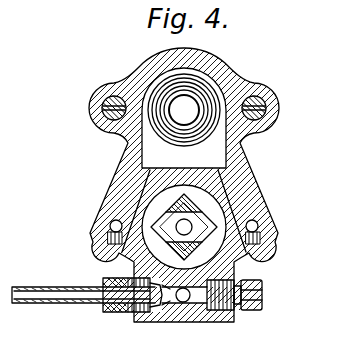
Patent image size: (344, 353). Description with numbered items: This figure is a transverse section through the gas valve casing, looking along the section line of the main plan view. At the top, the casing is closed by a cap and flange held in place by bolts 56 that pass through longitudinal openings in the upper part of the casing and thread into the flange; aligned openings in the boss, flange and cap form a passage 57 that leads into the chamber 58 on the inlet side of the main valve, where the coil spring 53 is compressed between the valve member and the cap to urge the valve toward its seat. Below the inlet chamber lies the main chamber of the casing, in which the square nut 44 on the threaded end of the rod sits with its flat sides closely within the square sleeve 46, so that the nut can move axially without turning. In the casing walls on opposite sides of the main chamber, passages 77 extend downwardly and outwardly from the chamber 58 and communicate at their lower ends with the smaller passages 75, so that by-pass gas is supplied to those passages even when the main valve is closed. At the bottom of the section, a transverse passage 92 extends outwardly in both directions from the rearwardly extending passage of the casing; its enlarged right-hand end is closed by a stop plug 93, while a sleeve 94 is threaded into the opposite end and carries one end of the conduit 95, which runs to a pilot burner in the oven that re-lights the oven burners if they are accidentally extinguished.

The coil spring 53 is at (230, 82).
The bolts 56 is at (107, 107).
The passage 57 is at (187, 103).
The chamber 58 is at (213, 150).
The square nut 44 is at (177, 203).
The square sleeve 46 is at (203, 245).
The passage 77 is at (132, 200).
The passage 75 is at (110, 226).
The transverse passage 92 is at (163, 318).
The stop plug 93 is at (250, 314).
The sleeve 94 is at (103, 283).
The conduit 95 is at (30, 305).